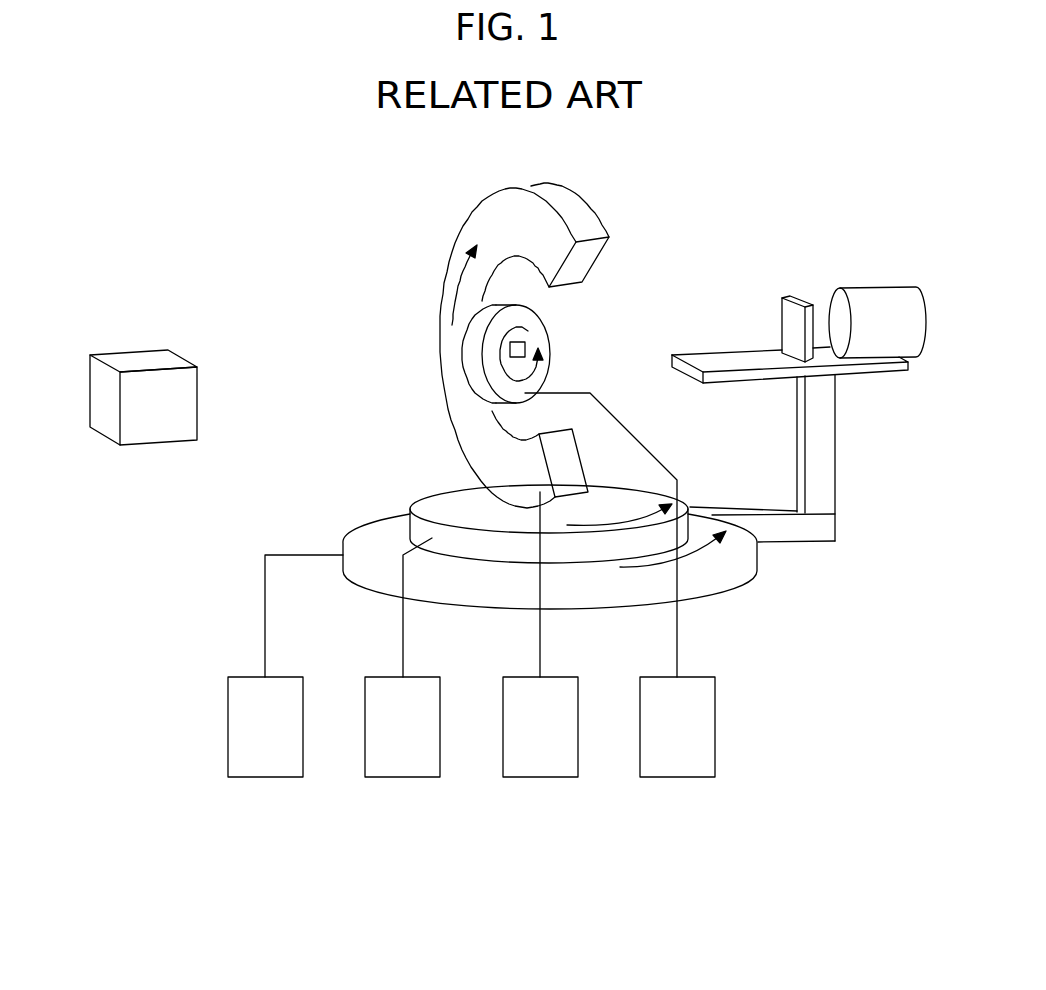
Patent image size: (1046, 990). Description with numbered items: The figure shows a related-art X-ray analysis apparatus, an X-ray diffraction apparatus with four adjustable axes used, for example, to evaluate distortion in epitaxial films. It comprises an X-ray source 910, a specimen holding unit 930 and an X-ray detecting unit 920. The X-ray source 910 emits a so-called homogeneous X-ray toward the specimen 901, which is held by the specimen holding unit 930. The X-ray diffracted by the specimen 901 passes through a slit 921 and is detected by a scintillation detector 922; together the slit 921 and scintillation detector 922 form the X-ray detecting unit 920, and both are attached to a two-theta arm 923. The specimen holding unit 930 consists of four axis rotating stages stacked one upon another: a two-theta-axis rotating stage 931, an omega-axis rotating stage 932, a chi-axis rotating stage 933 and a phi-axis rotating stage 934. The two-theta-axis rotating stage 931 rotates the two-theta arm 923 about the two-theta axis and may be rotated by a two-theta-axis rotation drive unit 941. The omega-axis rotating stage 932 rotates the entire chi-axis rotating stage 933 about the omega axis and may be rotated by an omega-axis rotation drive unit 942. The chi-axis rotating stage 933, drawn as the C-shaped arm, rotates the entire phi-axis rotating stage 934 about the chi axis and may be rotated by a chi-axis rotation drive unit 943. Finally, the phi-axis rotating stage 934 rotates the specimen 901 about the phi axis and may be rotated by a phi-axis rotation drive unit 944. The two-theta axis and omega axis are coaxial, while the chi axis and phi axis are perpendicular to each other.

The specimen 901 is at (526, 347).
The X-ray source 910 is at (142, 358).
The X-ray detecting unit 920 is at (905, 243).
The slit 921 is at (797, 298).
The scintillation detector 922 is at (875, 297).
The 2θ arm 923 is at (835, 428).
The specimen holding unit 930 is at (312, 200).
The 2θ-axis rotating stage 931 is at (393, 527).
The ω-axis rotating stage 932 is at (442, 495).
The χ-axis rotating stage 933 is at (472, 220).
The φ-axis rotating stage 934 is at (468, 353).
The 2θ-axis rotation drive unit 941 is at (268, 777).
The ω-axis rotation drive unit 942 is at (405, 777).
The χ-axis rotation drive unit 943 is at (541, 777).
The φ-axis rotation drive unit 944 is at (677, 777).